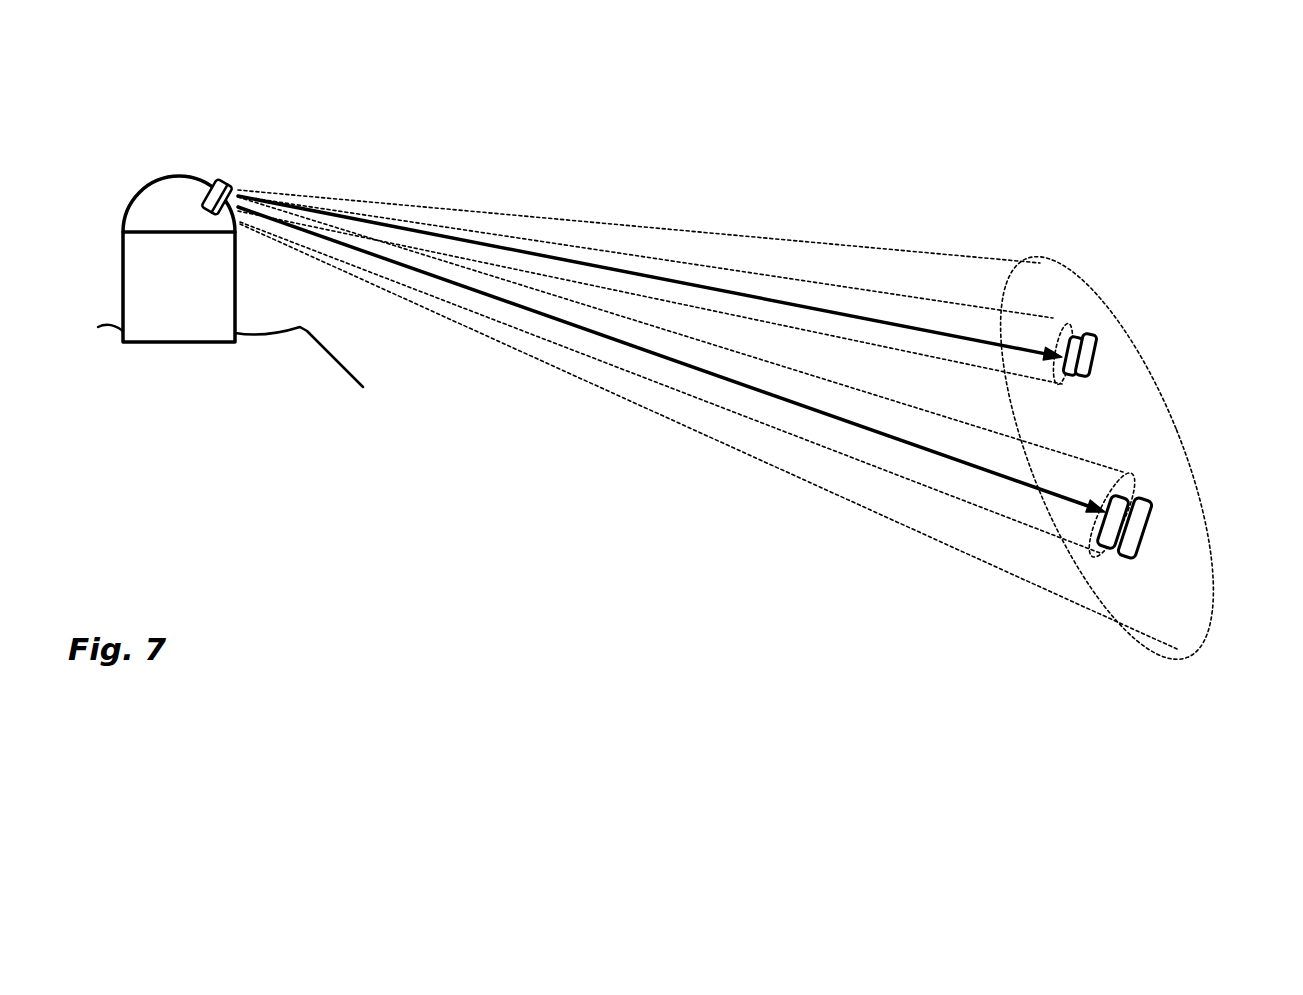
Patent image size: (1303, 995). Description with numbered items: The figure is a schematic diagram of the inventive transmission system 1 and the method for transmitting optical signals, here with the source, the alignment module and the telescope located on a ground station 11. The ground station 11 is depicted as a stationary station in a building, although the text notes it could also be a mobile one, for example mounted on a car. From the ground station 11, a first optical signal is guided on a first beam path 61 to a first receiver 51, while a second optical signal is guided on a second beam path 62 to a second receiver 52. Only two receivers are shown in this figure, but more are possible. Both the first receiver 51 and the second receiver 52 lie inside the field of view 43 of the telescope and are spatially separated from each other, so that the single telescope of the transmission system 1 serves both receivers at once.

The transmission system 1 is at (381, 516).
The ground station 11 is at (188, 207).
The field of view 43 is at (1113, 368).
The first receiver 51 is at (1130, 519).
The second receiver 52 is at (1086, 330).
The first beam path 61 is at (962, 464).
The second beam path 62 is at (932, 332).